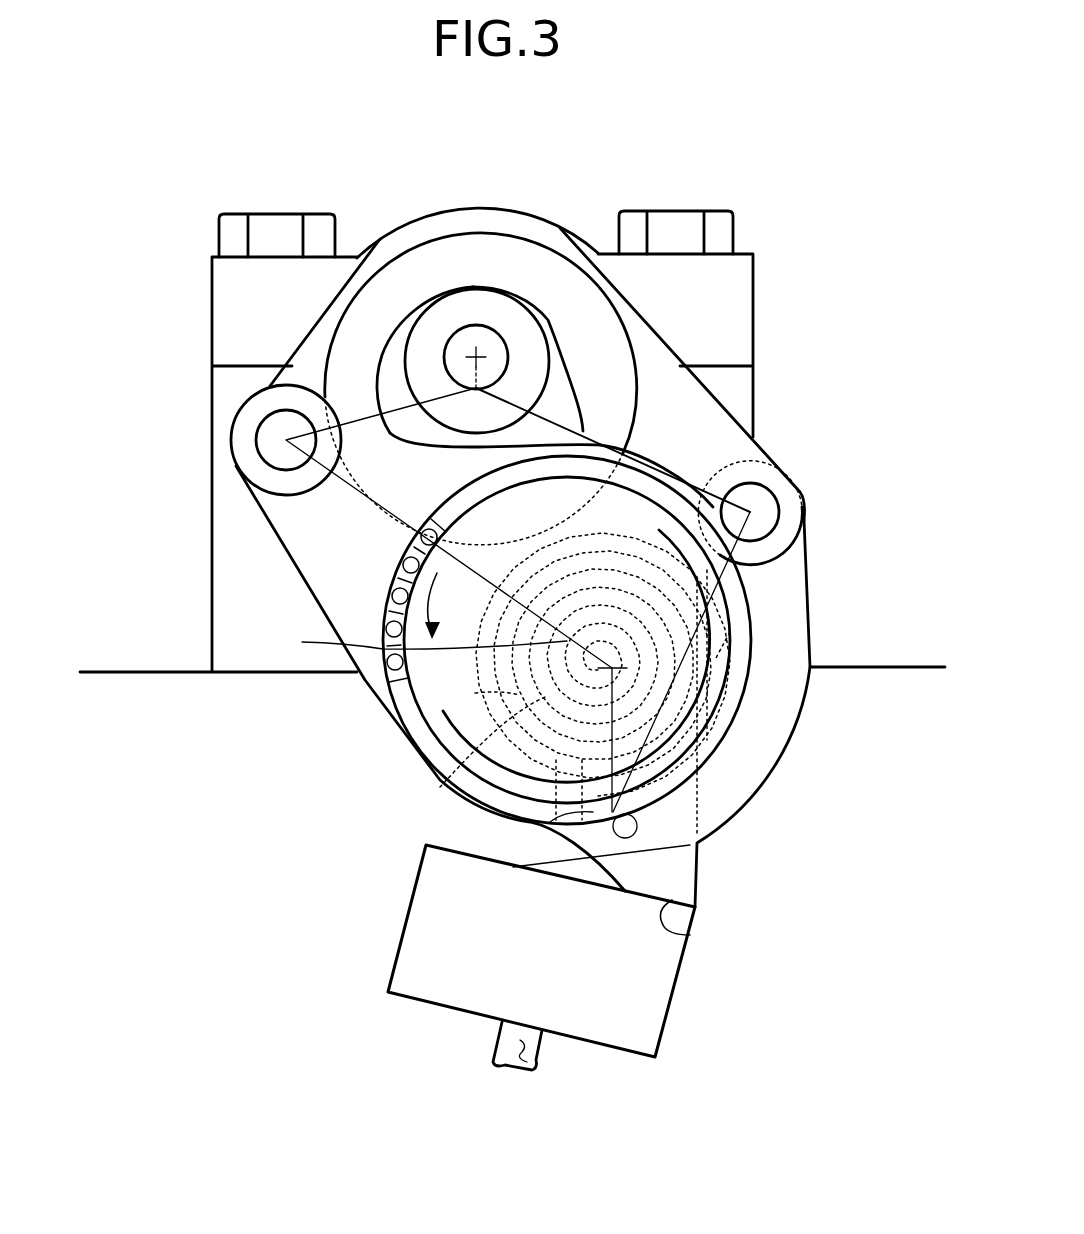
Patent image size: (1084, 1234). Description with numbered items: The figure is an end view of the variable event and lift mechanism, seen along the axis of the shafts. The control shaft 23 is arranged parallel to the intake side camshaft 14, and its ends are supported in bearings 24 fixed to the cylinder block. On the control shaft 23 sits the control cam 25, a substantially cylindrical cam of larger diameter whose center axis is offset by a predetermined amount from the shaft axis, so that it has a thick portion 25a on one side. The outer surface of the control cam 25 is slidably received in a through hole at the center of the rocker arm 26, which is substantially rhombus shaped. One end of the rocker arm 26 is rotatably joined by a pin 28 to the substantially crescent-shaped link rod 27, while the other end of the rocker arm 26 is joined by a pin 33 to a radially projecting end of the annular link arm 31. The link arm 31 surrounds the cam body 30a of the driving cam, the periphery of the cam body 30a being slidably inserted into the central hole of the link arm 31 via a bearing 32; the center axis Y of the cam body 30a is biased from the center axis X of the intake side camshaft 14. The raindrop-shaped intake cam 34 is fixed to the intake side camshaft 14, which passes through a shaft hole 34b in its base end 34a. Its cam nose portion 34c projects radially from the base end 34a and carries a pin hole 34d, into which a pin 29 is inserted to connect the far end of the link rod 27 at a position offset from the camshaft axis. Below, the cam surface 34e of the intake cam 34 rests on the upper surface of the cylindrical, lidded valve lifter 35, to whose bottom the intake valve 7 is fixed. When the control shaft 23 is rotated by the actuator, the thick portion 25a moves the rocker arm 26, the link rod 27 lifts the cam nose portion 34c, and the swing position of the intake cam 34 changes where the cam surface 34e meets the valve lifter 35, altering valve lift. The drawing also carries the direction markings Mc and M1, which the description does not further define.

The intake valve 7 is at (543, 1047).
The intake side camshaft 14 is at (440, 787).
The control shaft 23 is at (481, 312).
The bearings 24 is at (762, 327).
The control cam 25 is at (565, 335).
The thick portion 25a is at (440, 455).
The rocker arm 26 is at (645, 318).
The link rod 27 is at (813, 648).
The pin 28 is at (765, 500).
The pin 29 is at (513, 867).
The cam body 30a is at (447, 720).
The link arm 31 is at (292, 573).
The bearing 32 is at (383, 623).
The pin 33 is at (283, 440).
The intake cam 34 is at (705, 775).
The base end 34a is at (475, 693).
The shaft hole 34b is at (730, 632).
The cam nose portion 34c is at (690, 930).
The pin hole 34d is at (650, 820).
The cam surface 34e is at (540, 824).
The valve lifter 35 is at (418, 1000).
The center axis of intake side camshaft X is at (740, 700).
The center axis of cam body Y is at (426, 646).
The rotation direction Mc is at (412, 142).
The rotation direction M1 is at (788, 913).